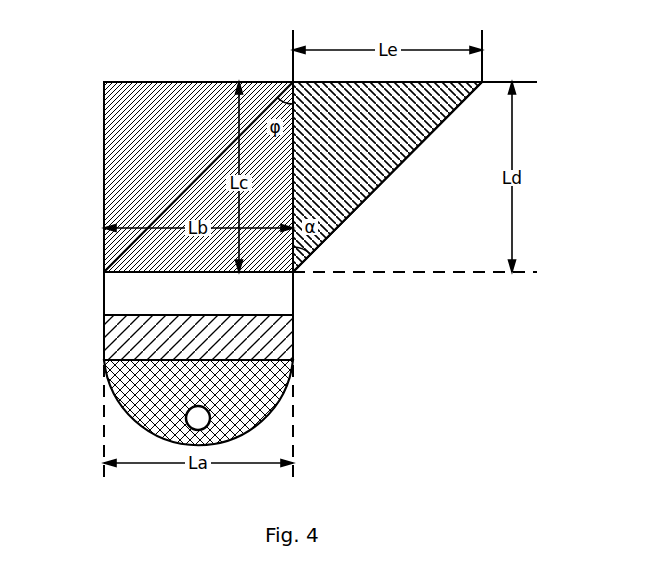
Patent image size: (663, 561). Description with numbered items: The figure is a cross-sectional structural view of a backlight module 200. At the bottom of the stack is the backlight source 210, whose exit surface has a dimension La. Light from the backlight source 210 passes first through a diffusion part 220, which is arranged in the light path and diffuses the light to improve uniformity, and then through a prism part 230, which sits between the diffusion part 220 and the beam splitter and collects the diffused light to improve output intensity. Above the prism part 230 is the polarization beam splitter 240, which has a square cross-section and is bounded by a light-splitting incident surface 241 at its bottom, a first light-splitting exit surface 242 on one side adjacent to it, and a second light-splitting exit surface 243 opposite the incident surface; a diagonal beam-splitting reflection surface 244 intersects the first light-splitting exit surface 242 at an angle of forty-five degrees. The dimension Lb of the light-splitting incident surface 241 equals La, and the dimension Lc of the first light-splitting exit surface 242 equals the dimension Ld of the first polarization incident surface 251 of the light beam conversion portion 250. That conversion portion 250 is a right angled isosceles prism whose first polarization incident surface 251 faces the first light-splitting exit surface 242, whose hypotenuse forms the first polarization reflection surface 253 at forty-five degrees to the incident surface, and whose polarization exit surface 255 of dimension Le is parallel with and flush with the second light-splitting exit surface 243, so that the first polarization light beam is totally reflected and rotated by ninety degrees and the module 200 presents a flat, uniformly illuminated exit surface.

The backlight module 200 is at (88, 73).
The backlight source 210 is at (198, 402).
The diffusion part 220 is at (198, 337).
The prism part 230 is at (198, 293).
The polarization beam splitter 240 is at (198, 177).
The light-splitting incident surface 241 is at (198, 259).
The first light-splitting exit surface 242 is at (272, 177).
The second light-splitting exit surface 243 is at (198, 94).
The beam-splitting reflection surface 244 is at (198, 177).
The light beam conversion portion 250 is at (387, 177).
The first polarization incident surface 251 is at (313, 177).
The first polarization reflection surface 253 is at (387, 177).
The polarization exit surface 255 is at (387, 94).